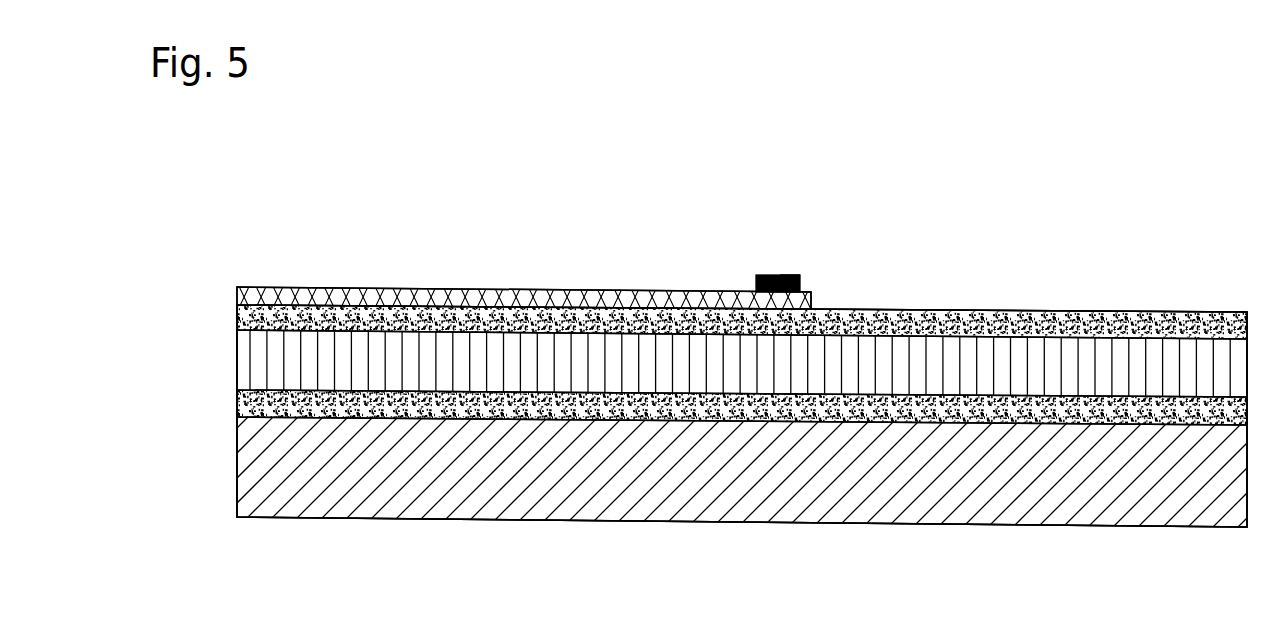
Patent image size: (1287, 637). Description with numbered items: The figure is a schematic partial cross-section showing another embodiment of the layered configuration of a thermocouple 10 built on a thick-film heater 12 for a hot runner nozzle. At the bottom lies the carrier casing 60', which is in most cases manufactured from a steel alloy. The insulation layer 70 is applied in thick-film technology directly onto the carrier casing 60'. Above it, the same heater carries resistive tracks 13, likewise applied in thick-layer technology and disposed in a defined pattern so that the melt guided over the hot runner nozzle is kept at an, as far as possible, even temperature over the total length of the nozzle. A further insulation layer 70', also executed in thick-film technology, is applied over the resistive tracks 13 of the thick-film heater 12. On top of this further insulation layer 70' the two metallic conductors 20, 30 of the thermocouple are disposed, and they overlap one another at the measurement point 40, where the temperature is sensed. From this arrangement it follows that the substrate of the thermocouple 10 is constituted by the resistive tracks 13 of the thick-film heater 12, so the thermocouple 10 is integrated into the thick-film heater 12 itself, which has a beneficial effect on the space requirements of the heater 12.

The thermocouple 10 is at (742, 343).
The thick-film heater 12 is at (1102, 269).
The resistive tracks 13 is at (222, 354).
The metallic conductor 20 is at (362, 266).
The metallic conductor 30 is at (746, 261).
The measurement point 40 is at (792, 257).
The further insulation layer 70' is at (696, 298).
The insulation layer 70 is at (696, 407).
The carrier casing 60' is at (708, 470).